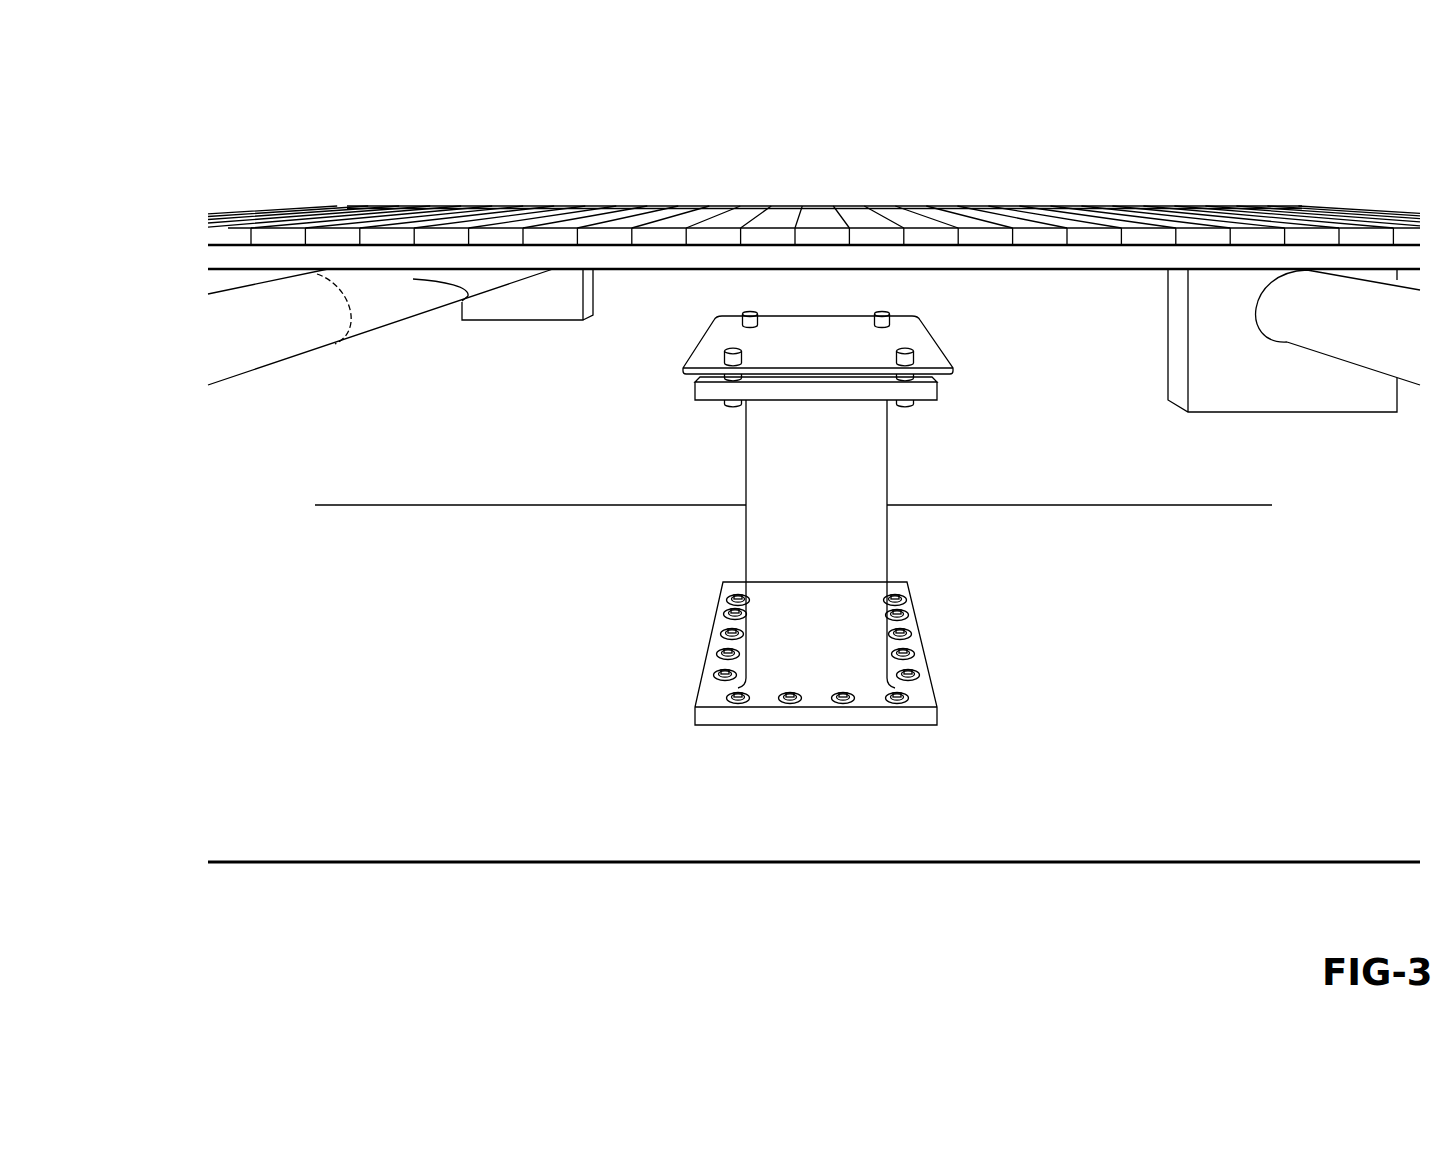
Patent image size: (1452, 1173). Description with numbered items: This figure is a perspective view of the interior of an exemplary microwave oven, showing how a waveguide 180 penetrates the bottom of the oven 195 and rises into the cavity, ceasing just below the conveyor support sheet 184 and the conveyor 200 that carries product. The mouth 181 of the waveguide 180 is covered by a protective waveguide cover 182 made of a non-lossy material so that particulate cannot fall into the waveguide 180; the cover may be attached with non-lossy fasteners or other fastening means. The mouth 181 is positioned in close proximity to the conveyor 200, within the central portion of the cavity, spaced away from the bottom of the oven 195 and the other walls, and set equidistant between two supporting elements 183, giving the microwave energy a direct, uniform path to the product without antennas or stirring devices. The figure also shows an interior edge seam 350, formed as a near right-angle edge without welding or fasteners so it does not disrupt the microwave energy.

The conveyor 200 is at (467, 220).
The conveyor support sheet 184 is at (370, 259).
The supporting elements 183 is at (333, 305).
The mouth 181 is at (818, 347).
The waveguide cover 182 is at (710, 332).
The waveguide 180 is at (815, 472).
The interior edge seam 350 is at (413, 503).
The bottom of the oven 195 is at (412, 667).